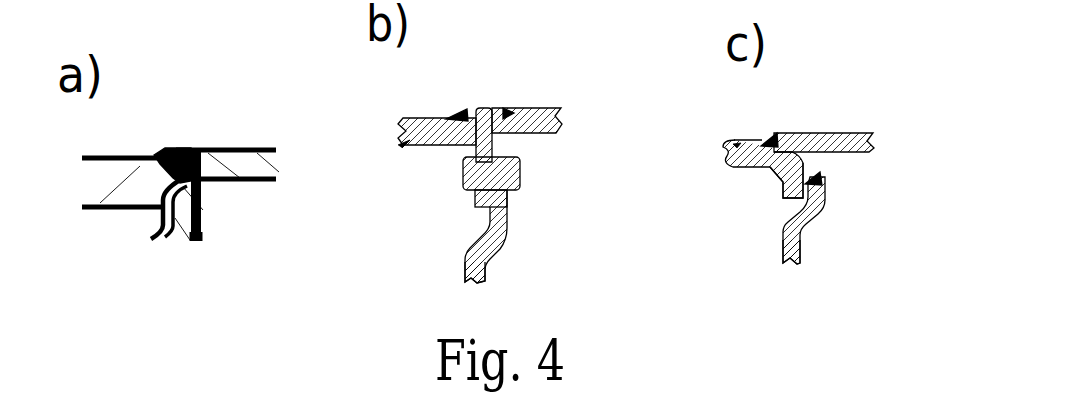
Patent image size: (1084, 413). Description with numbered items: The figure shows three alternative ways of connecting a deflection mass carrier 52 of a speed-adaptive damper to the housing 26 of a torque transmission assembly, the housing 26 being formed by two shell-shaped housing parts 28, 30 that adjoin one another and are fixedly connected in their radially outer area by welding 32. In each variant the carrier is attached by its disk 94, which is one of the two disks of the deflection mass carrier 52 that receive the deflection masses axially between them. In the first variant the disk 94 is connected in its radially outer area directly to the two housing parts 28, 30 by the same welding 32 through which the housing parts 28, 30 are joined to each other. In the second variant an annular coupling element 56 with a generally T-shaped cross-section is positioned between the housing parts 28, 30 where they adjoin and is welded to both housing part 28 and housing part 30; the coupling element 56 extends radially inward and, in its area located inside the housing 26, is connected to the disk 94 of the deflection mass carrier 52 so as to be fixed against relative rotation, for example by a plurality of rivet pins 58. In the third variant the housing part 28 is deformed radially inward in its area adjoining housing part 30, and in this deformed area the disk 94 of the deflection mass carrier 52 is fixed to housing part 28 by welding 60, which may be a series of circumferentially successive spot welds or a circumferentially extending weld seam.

In FIG. 4A, the housing 26 is at (231, 148).
In FIG. 4B, the housing 26 is at (412, 145).
In FIG. 4C, the housing 26 is at (737, 143).
In FIG. 4A, the housing part 28 is at (113, 177).
In FIG. 4B, the housing part 28 is at (430, 118).
In FIG. 4C, the housing part 28 is at (749, 170).
In FIG. 4A, the housing part 30 is at (267, 149).
In FIG. 4B, the housing part 30 is at (547, 110).
In FIG. 4C, the housing part 30 is at (847, 150).
In FIG. 4A, the welding 32 is at (179, 147).
In FIG. 4C, the welding 32 is at (767, 137).
In FIG. 4A, the deflection mass carrier 52 is at (207, 216).
In FIG. 4B, the deflection mass carrier 52 is at (492, 228).
In FIG. 4C, the deflection mass carrier 52 is at (803, 237).
In FIG. 4B, the coupling element 56 is at (486, 108).
In FIG. 4B, the rivet pins 58 is at (520, 172).
In FIG. 4C, the welding 60 is at (827, 183).
In FIG. 4A, the disk 94 is at (187, 193).
In FIG. 4B, the disk 94 is at (503, 203).
In FIG. 4C, the disk 94 is at (784, 247).